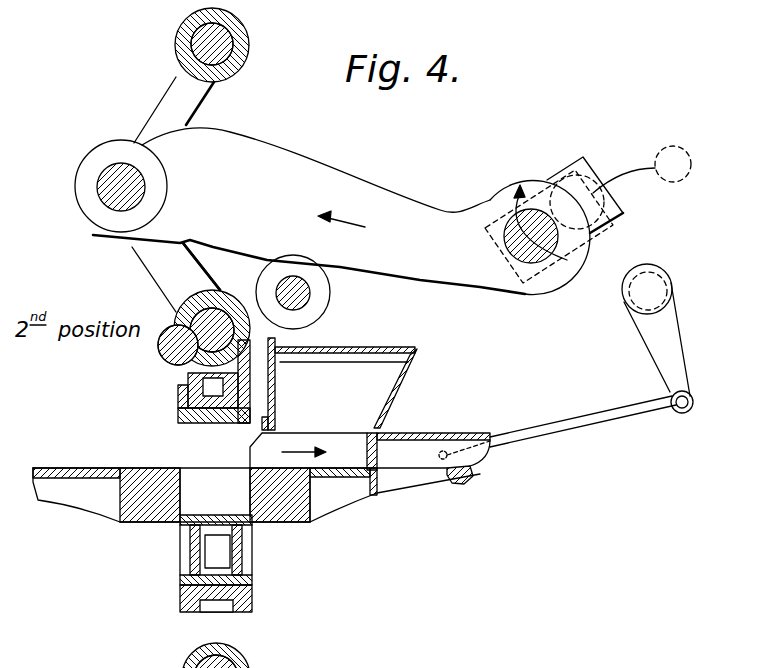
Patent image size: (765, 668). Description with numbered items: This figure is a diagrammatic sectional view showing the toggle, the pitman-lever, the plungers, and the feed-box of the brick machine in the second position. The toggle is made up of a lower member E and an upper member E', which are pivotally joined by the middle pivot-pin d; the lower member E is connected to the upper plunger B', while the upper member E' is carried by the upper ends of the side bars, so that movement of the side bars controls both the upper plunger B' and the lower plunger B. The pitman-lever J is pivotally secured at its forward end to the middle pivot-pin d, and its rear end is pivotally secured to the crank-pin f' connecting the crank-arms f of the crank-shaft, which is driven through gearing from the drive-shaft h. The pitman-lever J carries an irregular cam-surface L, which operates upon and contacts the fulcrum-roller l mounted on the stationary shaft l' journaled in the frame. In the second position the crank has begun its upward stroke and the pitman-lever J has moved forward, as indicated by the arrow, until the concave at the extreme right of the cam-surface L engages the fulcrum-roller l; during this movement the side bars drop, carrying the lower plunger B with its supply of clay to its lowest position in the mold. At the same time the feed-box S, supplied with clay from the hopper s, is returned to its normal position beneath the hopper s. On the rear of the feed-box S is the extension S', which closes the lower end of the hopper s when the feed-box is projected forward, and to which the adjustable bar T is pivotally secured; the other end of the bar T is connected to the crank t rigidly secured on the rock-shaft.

The middle pivot-pin d is at (105, 186).
The pitman-lever J is at (341, 211).
The upper member of the toggle E' is at (412, 100).
The lower member of the toggle E is at (191, 304).
The cam-surface L is at (206, 266).
The fulcrum-roller l is at (301, 299).
The stationary shaft l' is at (319, 296).
The crank-arms f is at (569, 220).
The crank-pin f' is at (554, 256).
The upper plunger B' is at (183, 381).
The hopper s is at (339, 384).
The feed-box S is at (365, 477).
The extension S' is at (433, 450).
The drive-shaft h is at (150, 483).
The lower plunger B is at (238, 591).
The crank t is at (652, 349).
The adjustable bar T is at (568, 427).